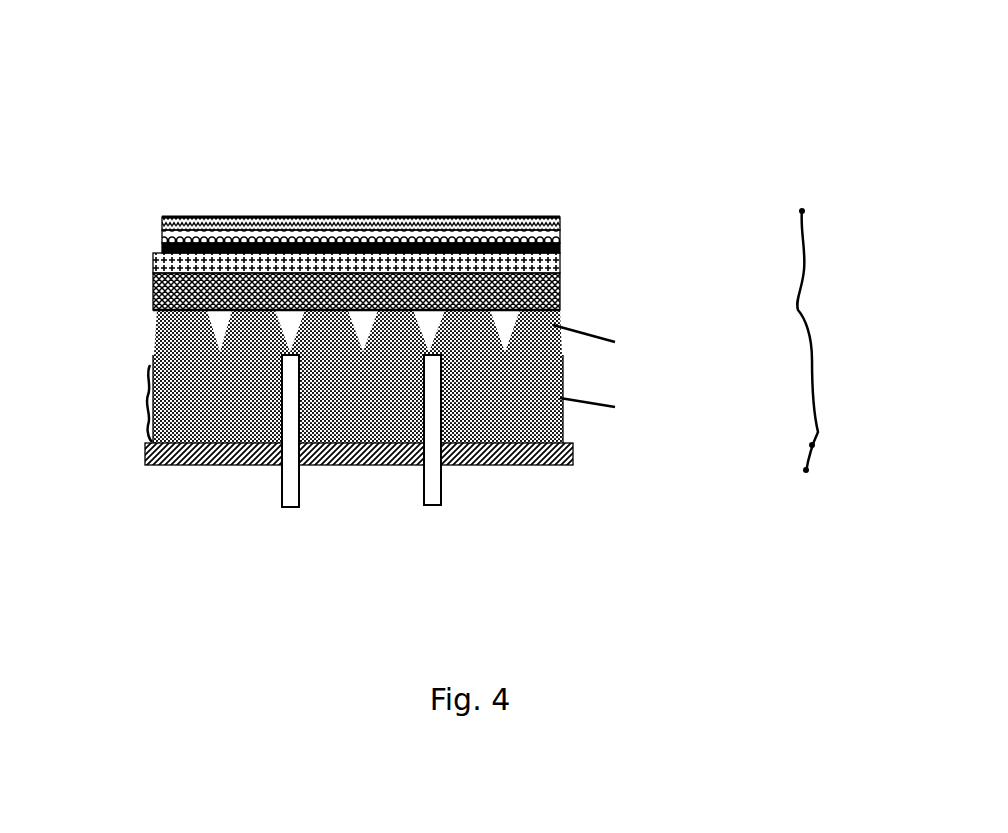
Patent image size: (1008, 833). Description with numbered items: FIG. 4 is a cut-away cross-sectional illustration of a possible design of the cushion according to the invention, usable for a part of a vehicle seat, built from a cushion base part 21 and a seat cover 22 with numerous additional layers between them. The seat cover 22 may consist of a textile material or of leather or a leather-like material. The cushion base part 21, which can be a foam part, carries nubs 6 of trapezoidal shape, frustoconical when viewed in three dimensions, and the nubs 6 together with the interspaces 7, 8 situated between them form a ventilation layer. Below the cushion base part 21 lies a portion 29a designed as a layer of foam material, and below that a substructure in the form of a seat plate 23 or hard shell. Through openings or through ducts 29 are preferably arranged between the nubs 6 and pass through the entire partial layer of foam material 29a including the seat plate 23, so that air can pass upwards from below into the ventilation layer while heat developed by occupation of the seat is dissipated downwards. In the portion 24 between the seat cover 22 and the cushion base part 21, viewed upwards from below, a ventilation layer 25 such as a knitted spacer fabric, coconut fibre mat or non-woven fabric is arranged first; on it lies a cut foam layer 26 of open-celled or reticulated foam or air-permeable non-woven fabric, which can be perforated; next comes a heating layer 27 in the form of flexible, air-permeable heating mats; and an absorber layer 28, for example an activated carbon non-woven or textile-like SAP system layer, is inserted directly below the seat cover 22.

The nubs 6 is at (248, 342).
The interspaces 7 is at (424, 335).
The interspaces 8 is at (424, 335).
The cushion base part 21 is at (562, 383).
The seat cover 22 is at (560, 224).
The seat plate 23 is at (573, 462).
The portion 24 is at (806, 262).
The ventilation layer 25 is at (560, 285).
The cut foam layer 26 is at (562, 260).
The heating layer 27 is at (560, 246).
The absorber layer 28 is at (560, 237).
The through ducts 29 is at (292, 455).
The layer of foam material 29a is at (147, 396).